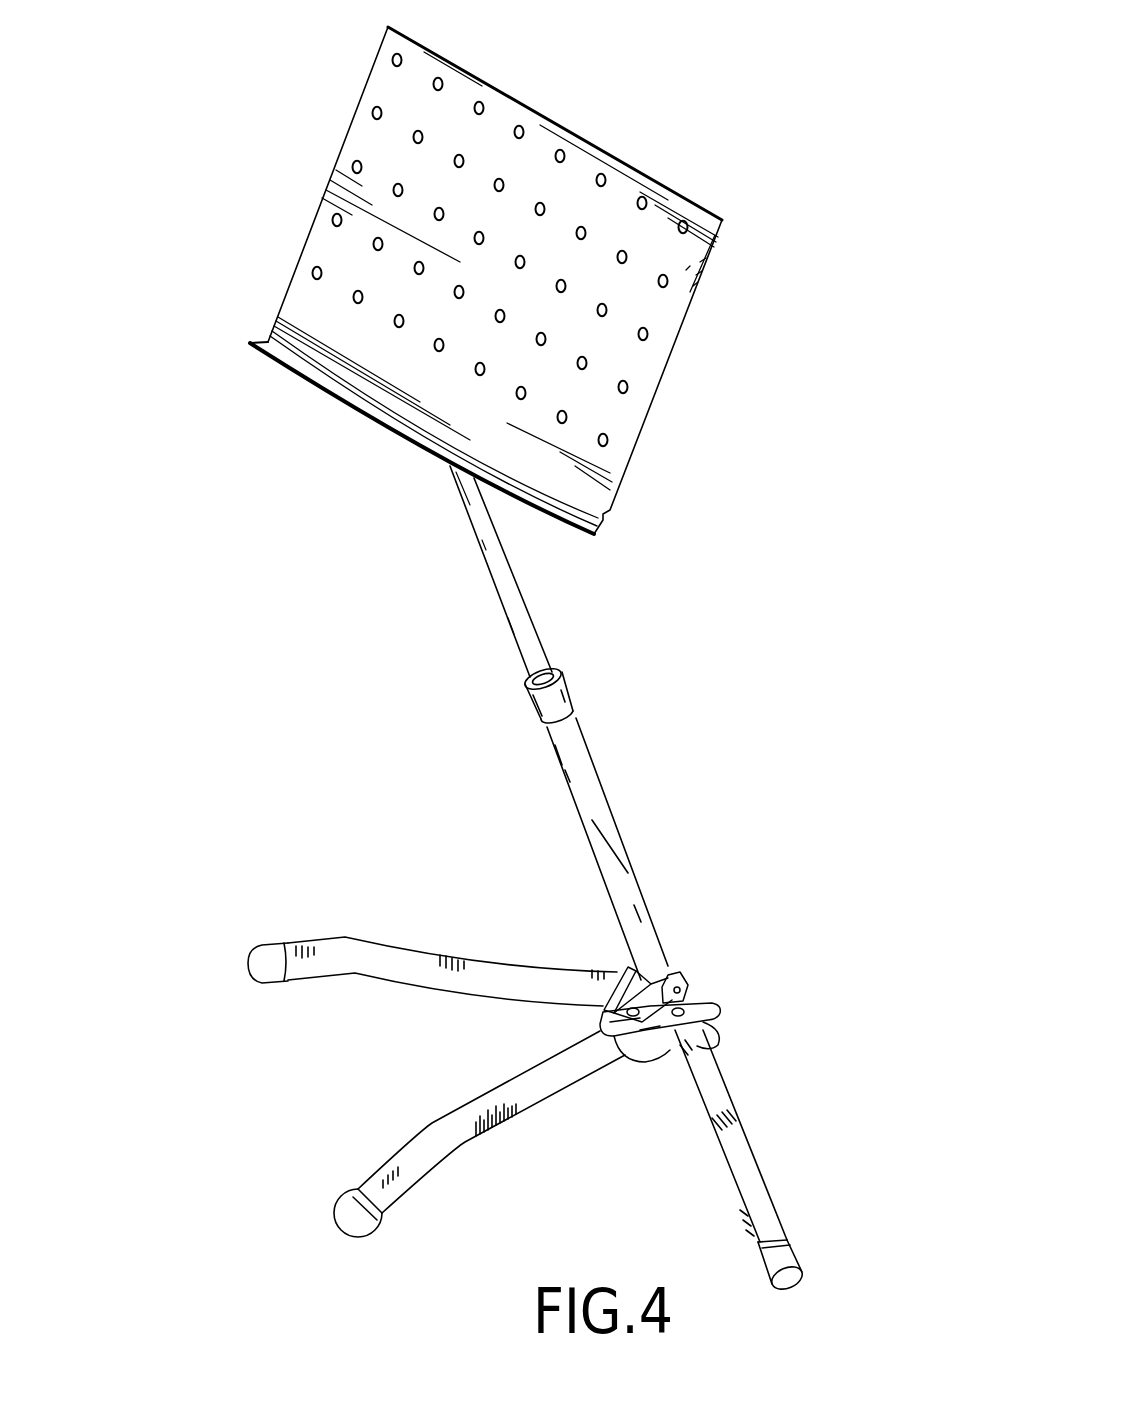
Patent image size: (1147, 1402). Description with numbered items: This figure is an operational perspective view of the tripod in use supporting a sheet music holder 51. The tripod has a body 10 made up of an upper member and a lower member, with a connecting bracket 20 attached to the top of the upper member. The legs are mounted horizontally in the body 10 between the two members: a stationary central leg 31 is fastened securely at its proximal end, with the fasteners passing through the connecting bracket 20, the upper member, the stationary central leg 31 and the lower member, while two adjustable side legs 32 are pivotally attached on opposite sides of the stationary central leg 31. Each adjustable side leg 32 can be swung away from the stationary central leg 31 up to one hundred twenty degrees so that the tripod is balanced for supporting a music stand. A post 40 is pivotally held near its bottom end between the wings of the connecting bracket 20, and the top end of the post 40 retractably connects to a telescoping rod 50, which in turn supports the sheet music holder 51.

The body 10 is at (732, 978).
The connecting bracket 20 is at (680, 968).
The stationary central leg 31 is at (523, 1103).
The adjustable side legs 32 is at (428, 957).
The post 40 is at (610, 830).
The telescoping rod 50 is at (532, 630).
The sheet music holder 51 is at (655, 390).